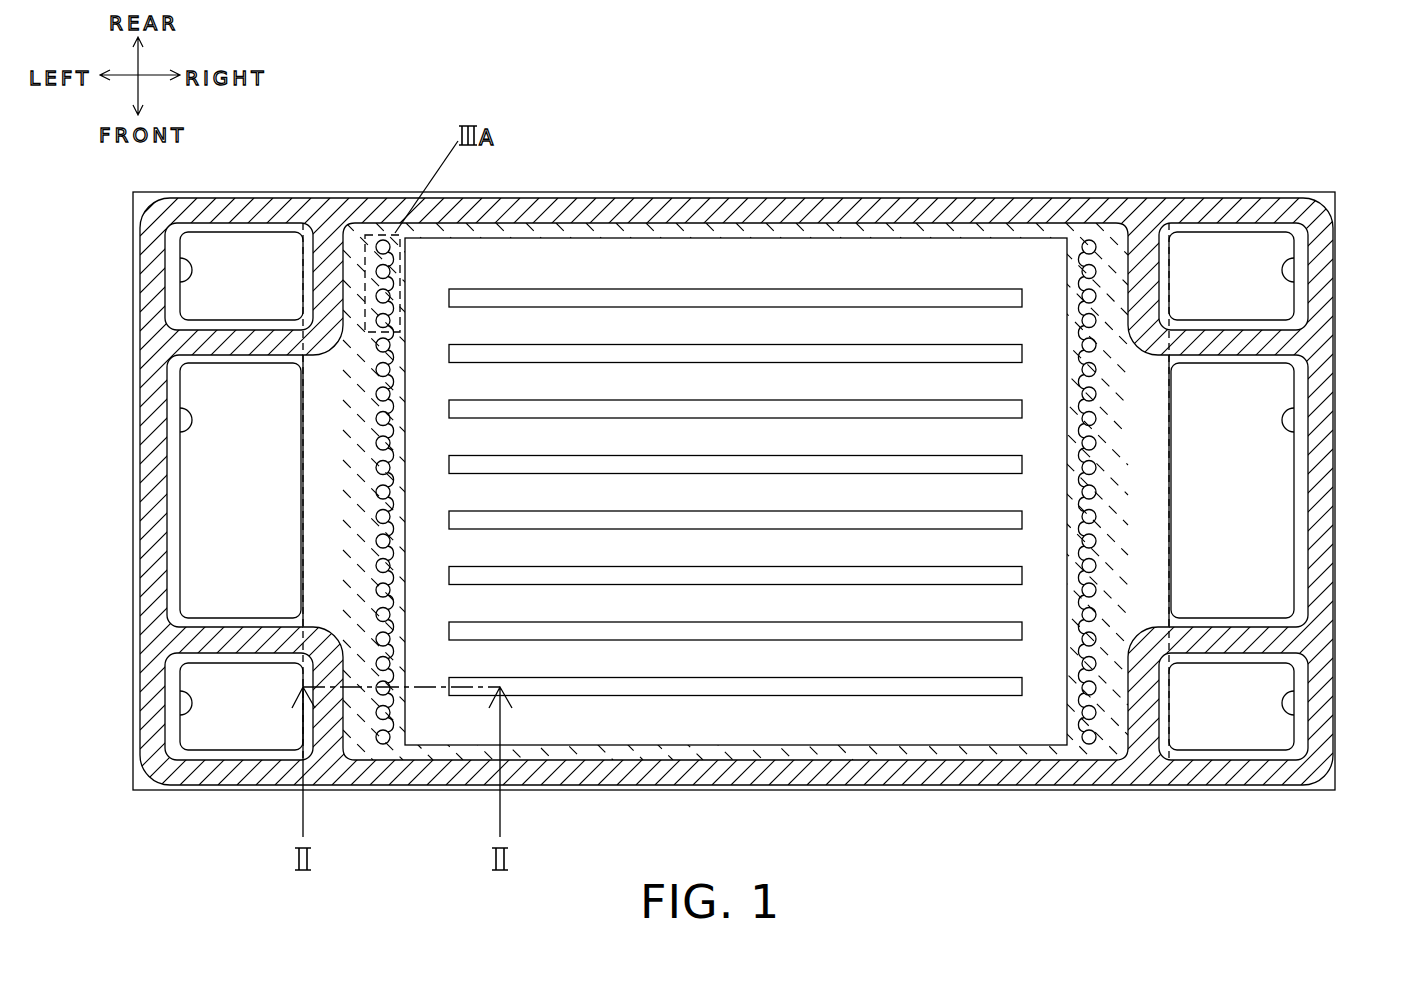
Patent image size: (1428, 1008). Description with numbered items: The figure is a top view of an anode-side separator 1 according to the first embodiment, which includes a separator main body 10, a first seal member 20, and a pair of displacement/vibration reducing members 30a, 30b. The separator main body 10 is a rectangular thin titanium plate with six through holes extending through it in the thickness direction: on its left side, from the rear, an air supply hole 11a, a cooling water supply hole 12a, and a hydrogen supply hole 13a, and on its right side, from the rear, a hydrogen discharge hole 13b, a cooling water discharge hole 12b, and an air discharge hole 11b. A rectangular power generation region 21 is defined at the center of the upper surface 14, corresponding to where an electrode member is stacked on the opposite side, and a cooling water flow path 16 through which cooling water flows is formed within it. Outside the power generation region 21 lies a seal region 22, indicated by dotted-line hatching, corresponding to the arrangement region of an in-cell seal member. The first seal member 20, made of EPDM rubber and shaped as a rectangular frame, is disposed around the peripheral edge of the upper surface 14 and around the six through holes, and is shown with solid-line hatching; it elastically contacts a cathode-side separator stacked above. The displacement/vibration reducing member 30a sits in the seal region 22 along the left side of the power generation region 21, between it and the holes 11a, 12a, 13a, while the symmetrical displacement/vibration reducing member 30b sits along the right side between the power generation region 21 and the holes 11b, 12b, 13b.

The anode-side separator 1 is at (1290, 158).
The separator main body 10 is at (994, 194).
The upper surface 14 is at (897, 196).
The first seal member 20 is at (756, 211).
The power generation region 21 is at (681, 745).
The seal region 22 is at (364, 740).
The cooling water flow path 16 is at (931, 297).
The displacement/vibration reducing member 30a is at (380, 240).
The displacement/vibration reducing member 30b is at (1093, 240).
The air supply hole 11a is at (192, 270).
The cooling water supply hole 12a is at (192, 420).
The hydrogen supply hole 13a is at (192, 703).
The air discharge hole 11b is at (1282, 703).
The cooling water discharge hole 12b is at (1282, 420).
The hydrogen discharge hole 13b is at (1282, 270).